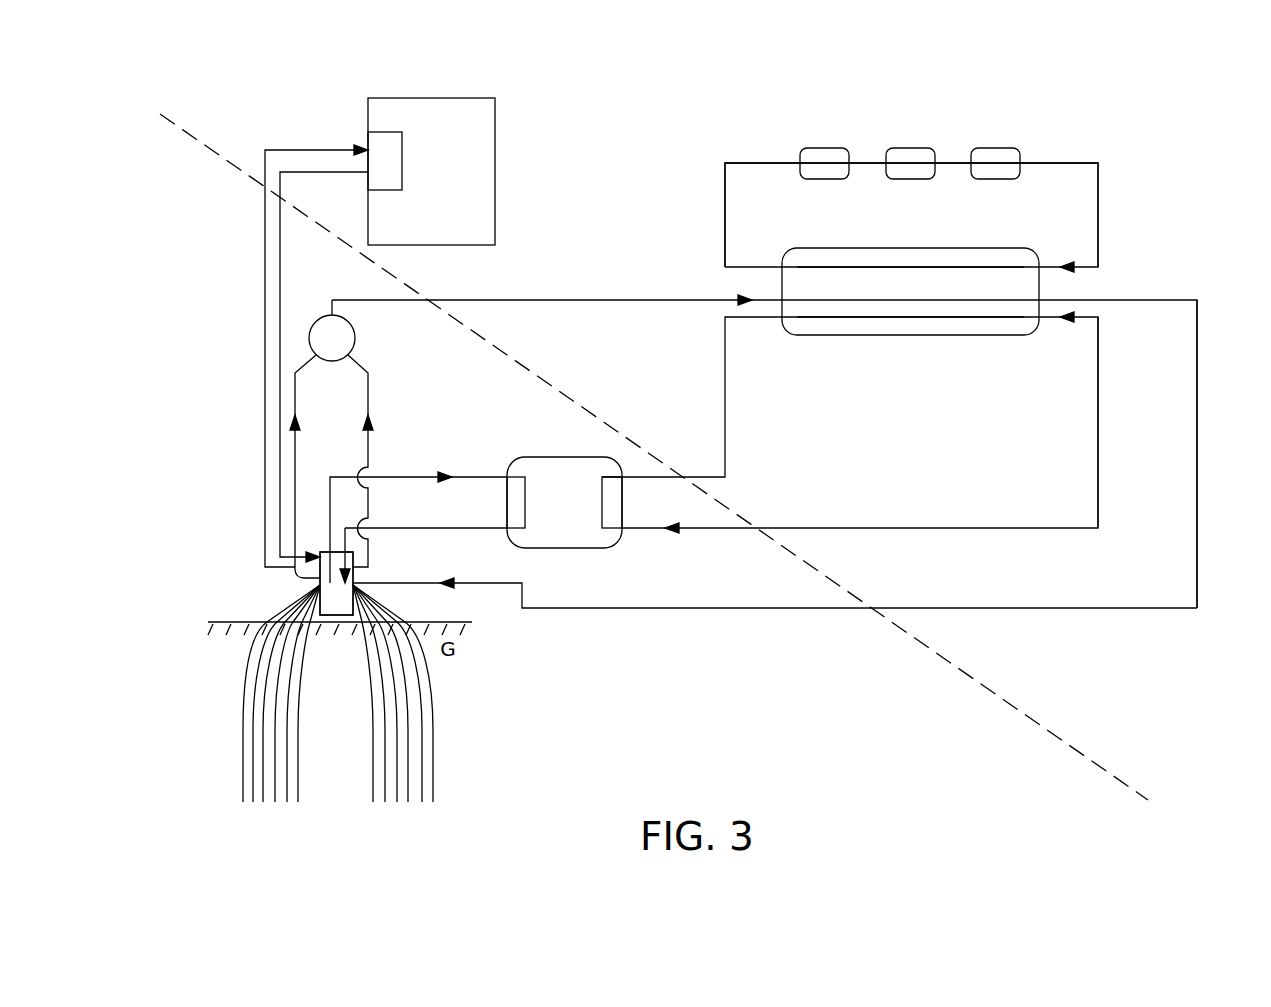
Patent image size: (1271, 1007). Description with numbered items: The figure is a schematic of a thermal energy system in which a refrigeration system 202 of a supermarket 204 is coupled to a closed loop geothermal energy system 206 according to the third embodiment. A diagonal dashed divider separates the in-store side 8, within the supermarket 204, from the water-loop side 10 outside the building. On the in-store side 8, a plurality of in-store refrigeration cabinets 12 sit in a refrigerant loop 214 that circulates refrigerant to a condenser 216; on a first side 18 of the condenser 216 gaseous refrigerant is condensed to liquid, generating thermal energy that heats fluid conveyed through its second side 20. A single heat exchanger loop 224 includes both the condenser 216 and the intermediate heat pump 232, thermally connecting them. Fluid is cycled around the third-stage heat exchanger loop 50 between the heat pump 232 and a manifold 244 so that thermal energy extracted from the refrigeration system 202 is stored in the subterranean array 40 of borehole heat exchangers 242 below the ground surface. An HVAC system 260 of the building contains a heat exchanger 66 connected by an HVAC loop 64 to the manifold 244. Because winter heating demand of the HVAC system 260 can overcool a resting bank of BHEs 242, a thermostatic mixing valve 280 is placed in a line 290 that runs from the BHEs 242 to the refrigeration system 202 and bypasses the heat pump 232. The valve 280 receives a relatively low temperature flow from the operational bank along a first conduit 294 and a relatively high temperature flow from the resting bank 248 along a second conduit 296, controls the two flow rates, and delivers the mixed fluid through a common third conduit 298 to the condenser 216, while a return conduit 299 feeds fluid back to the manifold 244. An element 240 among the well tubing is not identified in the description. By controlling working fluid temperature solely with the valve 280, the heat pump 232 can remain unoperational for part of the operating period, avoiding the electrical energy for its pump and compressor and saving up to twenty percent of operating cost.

The in-store side 8 is at (1136, 695).
The water-loop side 10 is at (842, 720).
The in-store refrigeration cabinets 12 is at (827, 147).
The first side of the condenser 18 is at (1010, 257).
The second side of the condenser 20 is at (988, 321).
The array of borehole heat exchangers 40 is at (260, 603).
The third-stage heat exchanger loop 50 is at (413, 475).
The HVAC loop 64 is at (280, 277).
The heat exchanger 66 is at (372, 182).
The refrigeration system 202 is at (1082, 148).
The supermarket 204 is at (1172, 180).
The closed loop geothermal energy system 206 is at (470, 714).
The refrigerant loop 214 is at (1099, 212).
The condenser 216 is at (913, 247).
The heat exchanger loop 224 is at (1100, 392).
The intermediate heat pump 232 is at (565, 548).
The inner tubing 240 is at (300, 756).
The borehole heat exchangers 242 is at (245, 690).
The manifold 244 is at (333, 612).
The resting bank 248 is at (373, 710).
The HVAC system 260 is at (495, 175).
The thermostatic mixing valve 280 is at (355, 340).
The line 290 is at (604, 297).
The first conduit 294 is at (297, 448).
The second conduit 296 is at (370, 392).
The common third conduit 298 is at (667, 303).
The return conduit 299 is at (763, 609).